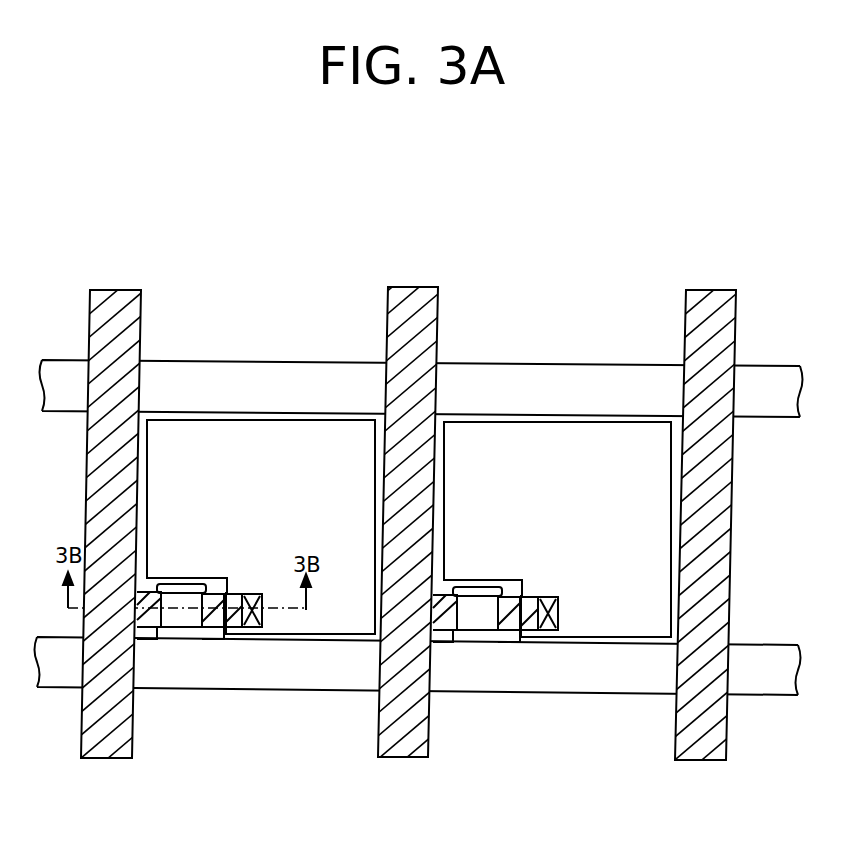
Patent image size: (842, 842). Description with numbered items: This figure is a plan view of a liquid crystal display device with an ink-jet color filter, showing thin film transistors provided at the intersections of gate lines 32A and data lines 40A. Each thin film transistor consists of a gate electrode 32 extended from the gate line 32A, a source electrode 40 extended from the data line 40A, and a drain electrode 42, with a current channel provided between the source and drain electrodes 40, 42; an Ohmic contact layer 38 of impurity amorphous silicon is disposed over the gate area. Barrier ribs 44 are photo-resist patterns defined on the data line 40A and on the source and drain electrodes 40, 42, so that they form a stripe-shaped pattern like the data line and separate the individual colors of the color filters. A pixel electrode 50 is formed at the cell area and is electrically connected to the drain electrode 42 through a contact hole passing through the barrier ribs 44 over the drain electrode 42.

The pixel electrode 50 is at (241, 428).
The data line 40A is at (88, 520).
The gate line 32A is at (282, 690).
The gate electrode 32 is at (173, 583).
The Ohmic contact layer 38 is at (200, 578).
The source electrode 40 is at (152, 635).
The drain electrode 42 is at (238, 594).
The barrier ribs 44 is at (240, 615).